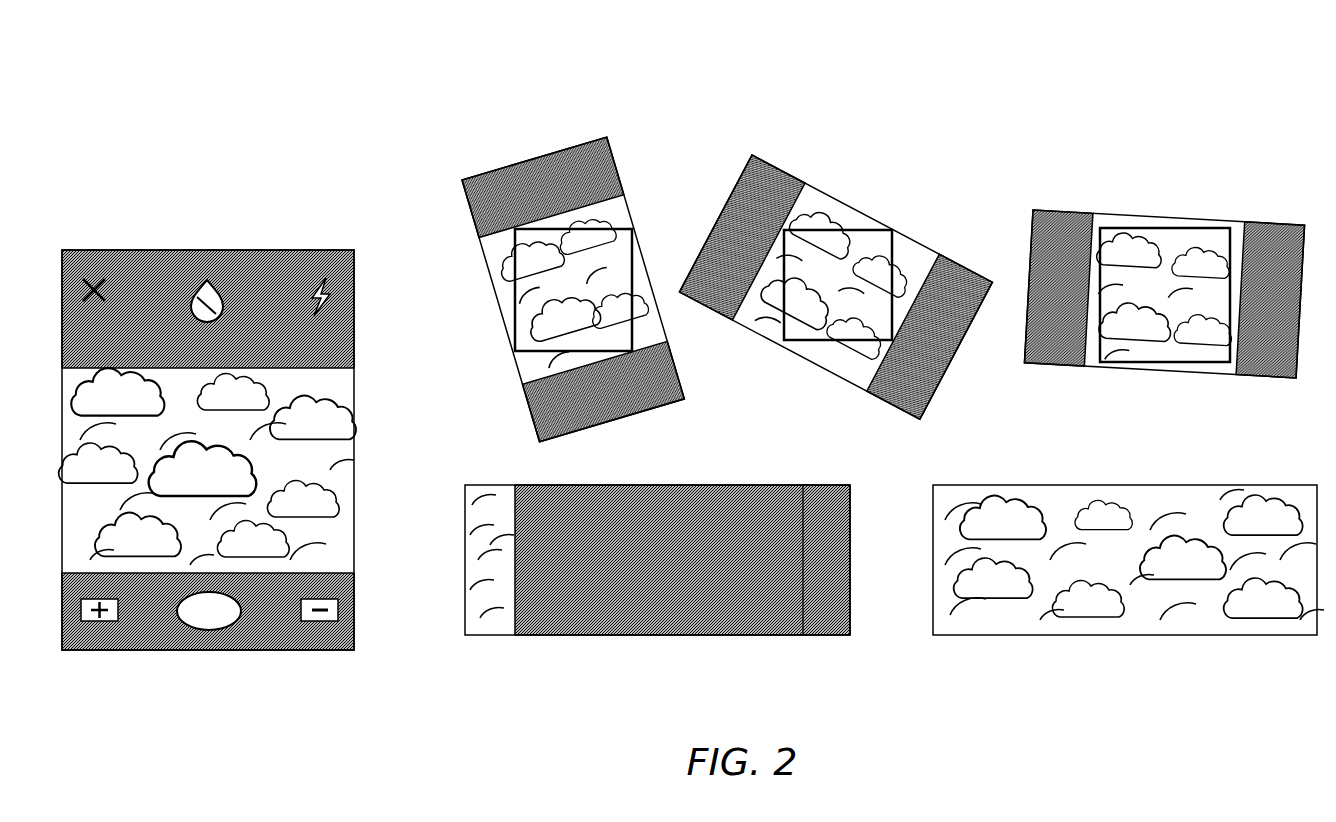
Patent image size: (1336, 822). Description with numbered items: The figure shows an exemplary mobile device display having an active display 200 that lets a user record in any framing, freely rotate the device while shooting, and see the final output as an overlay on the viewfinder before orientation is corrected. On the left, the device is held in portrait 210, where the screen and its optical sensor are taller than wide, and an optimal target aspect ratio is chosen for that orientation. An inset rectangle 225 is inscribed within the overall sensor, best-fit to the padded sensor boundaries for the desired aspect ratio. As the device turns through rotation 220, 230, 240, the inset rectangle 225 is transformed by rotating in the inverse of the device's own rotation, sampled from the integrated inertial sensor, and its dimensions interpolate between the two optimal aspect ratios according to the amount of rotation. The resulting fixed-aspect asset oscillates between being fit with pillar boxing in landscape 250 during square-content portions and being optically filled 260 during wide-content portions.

The active display 200 is at (740, 47).
The portrait orientation 210 is at (199, 250).
The rotation 220 is at (538, 158).
The inset rectangle 225 is at (622, 212).
The rotation 230 is at (835, 198).
The rotation 240 is at (1155, 217).
The landscape orientation with pillar boxing 250 is at (647, 635).
The optically filled output 260 is at (1110, 635).